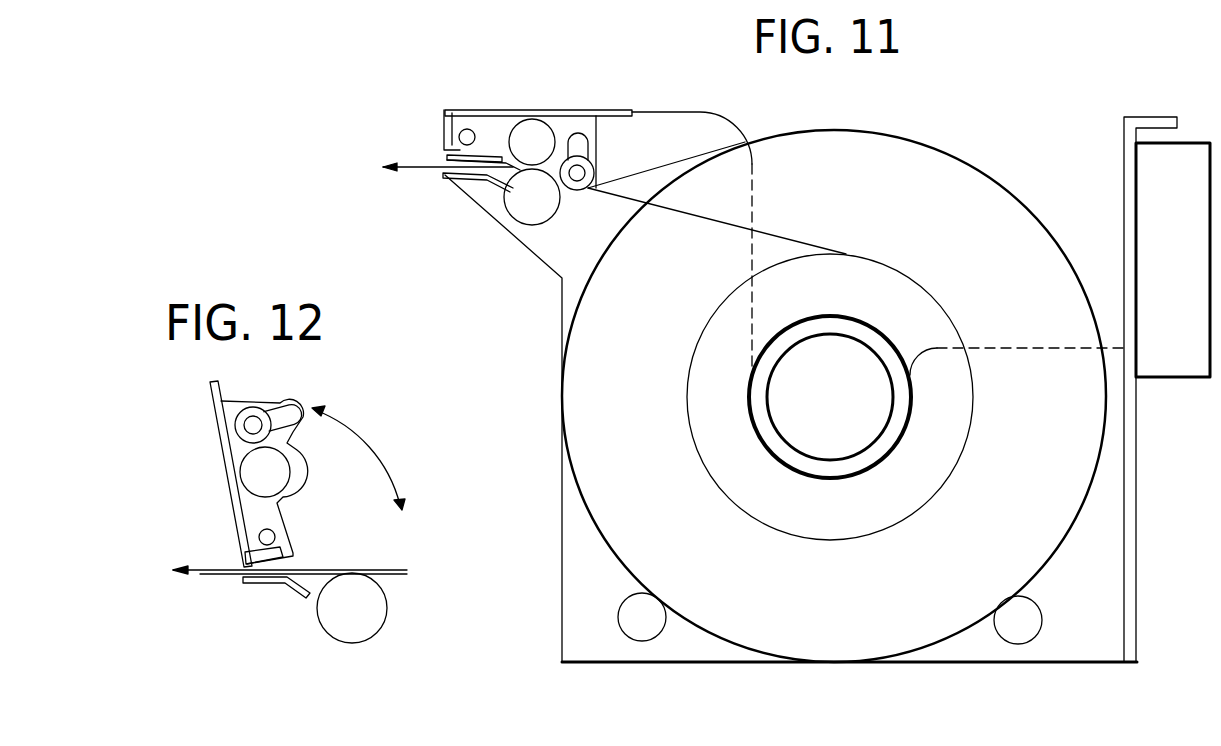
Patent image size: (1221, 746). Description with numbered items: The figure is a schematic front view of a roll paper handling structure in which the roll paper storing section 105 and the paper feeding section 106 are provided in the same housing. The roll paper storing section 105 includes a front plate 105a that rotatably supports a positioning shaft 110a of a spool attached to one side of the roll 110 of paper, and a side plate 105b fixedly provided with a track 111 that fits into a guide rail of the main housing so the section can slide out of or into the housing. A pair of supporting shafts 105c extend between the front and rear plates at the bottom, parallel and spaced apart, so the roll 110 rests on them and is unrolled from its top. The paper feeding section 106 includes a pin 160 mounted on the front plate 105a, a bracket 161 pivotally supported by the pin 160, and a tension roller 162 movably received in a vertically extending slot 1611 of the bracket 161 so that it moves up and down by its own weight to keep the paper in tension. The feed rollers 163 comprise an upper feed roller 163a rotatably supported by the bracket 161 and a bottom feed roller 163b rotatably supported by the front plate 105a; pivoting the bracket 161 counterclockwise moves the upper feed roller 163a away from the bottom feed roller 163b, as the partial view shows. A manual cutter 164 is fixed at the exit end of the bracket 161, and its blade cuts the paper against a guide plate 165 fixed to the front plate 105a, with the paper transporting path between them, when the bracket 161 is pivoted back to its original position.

In FIG. 11, the roll paper storing section 105 is at (828, 398).
In FIG. 11, the front plate 105a is at (1098, 663).
In FIG. 11, the side plate 105b is at (1137, 603).
In FIG. 11, the supporting shafts 105c is at (640, 642).
In FIG. 11, the paper feeding section 106 is at (530, 148).
In FIG. 12, the paper feeding section 106 is at (303, 501).
In FIG. 11, the roll of paper 110 is at (834, 396).
In FIG. 11, the positioning shaft 110a is at (883, 345).
In FIG. 11, the track 111 is at (1170, 378).
In FIG. 11, the pin 160 is at (462, 131).
In FIG. 12, the pin 160 is at (276, 537).
In FIG. 11, the bracket 161 is at (585, 112).
In FIG. 12, the bracket 161 is at (222, 437).
In FIG. 11, the slot 1611 is at (581, 138).
In FIG. 11, the tension roller 162 is at (592, 172).
In FIG. 12, the tension roller 162 is at (257, 418).
In FIG. 11, the feed rollers 163 is at (530, 173).
In FIG. 11, the upper feed roller 163a is at (532, 128).
In FIG. 12, the upper feed roller 163a is at (280, 470).
In FIG. 11, the bottom feed roller 163b is at (520, 213).
In FIG. 12, the bottom feed roller 163b is at (381, 609).
In FIG. 11, the manual cutter 164 is at (489, 153).
In FIG. 11, the guide plate 165 is at (455, 178).